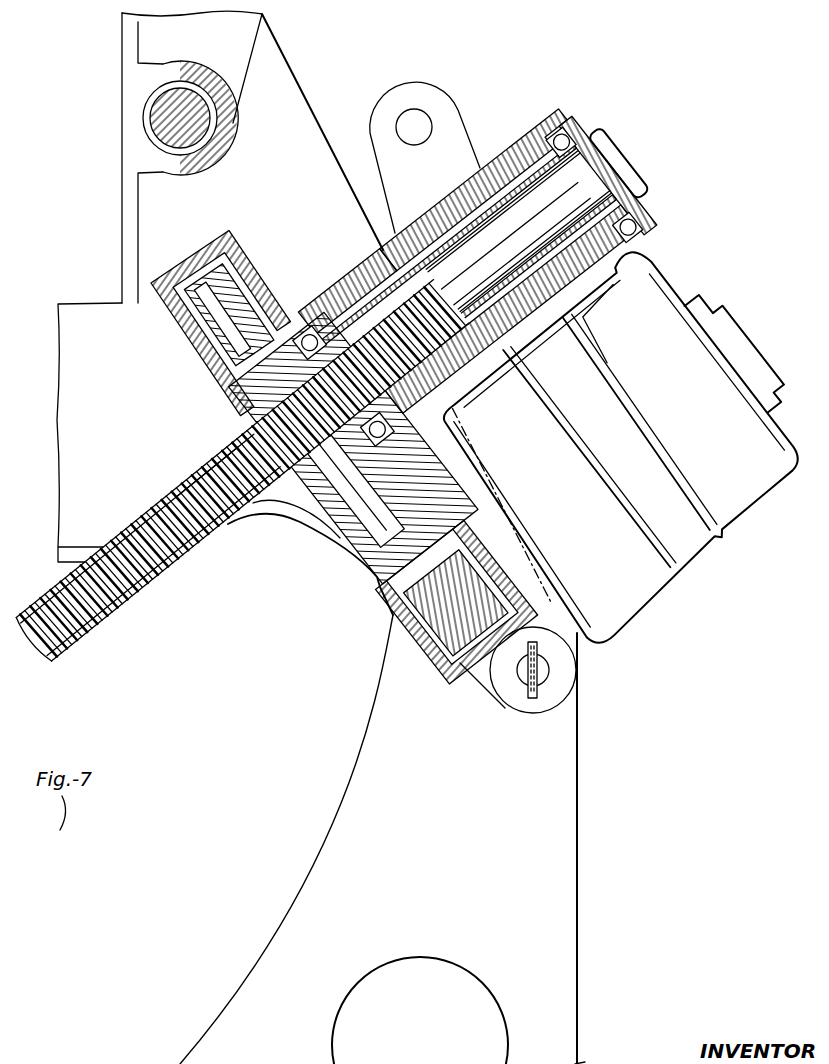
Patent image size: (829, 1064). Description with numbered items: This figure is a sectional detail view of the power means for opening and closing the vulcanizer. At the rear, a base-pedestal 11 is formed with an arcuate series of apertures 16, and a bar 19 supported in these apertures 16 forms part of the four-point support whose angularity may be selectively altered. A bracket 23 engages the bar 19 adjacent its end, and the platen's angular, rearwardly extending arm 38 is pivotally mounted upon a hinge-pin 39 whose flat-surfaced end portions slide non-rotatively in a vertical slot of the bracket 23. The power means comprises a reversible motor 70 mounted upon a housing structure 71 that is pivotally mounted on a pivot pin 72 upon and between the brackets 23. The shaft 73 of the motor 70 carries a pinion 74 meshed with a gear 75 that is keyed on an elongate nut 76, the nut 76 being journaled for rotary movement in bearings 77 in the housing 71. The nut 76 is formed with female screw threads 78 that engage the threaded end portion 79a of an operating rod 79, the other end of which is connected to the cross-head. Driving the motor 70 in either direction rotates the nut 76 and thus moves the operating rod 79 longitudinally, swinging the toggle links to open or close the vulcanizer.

The base-pedestal 11 is at (565, 833).
The aperture 16 is at (420, 119).
The bar 19 is at (522, 672).
The bracket 23 is at (108, 292).
The arm 38 is at (248, 47).
The hinge-pin 39 is at (152, 108).
The reversible motor 70 is at (738, 505).
The housing structure 71 is at (352, 278).
The pivot pin 72 is at (327, 296).
The shaft 73 is at (398, 612).
The pinion 74 is at (438, 640).
The gear 75 is at (400, 457).
The elongate nut 76 is at (252, 422).
The bearing 77 is at (306, 330).
The female screw threads 78 is at (483, 257).
The operating rod 79 is at (22, 655).
The threaded end portion 79a is at (185, 540).